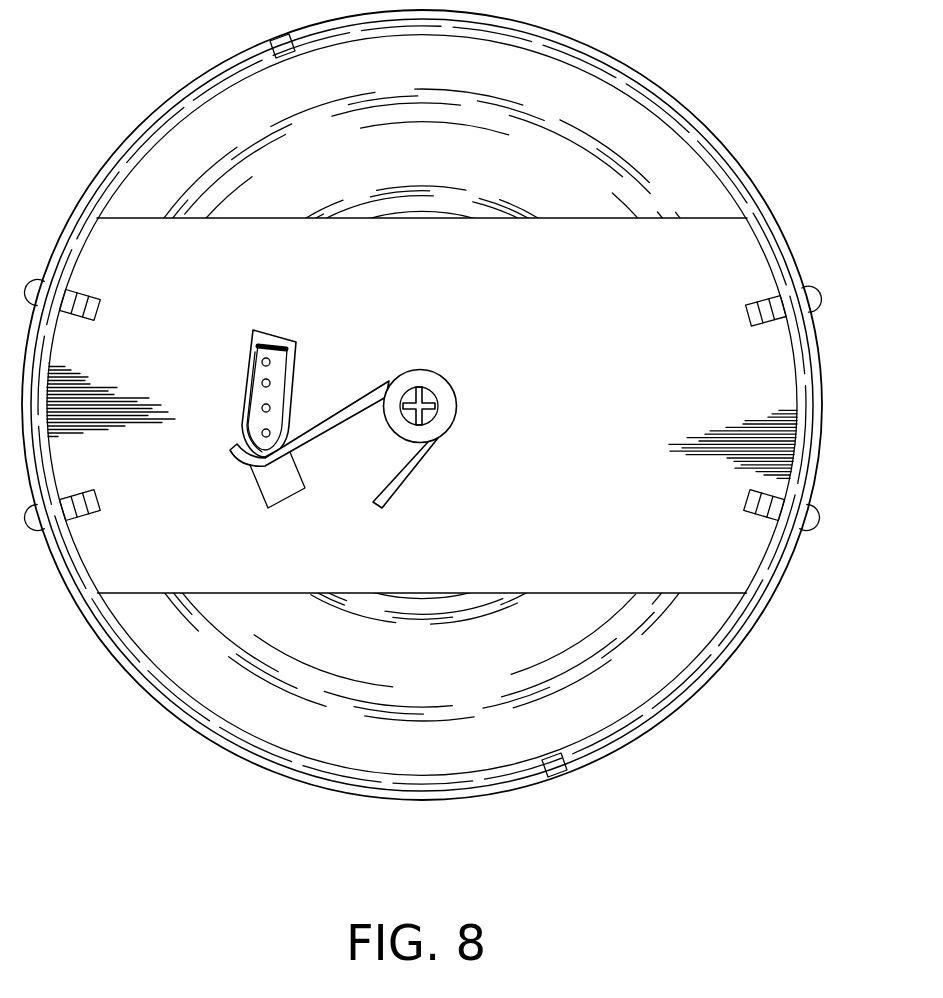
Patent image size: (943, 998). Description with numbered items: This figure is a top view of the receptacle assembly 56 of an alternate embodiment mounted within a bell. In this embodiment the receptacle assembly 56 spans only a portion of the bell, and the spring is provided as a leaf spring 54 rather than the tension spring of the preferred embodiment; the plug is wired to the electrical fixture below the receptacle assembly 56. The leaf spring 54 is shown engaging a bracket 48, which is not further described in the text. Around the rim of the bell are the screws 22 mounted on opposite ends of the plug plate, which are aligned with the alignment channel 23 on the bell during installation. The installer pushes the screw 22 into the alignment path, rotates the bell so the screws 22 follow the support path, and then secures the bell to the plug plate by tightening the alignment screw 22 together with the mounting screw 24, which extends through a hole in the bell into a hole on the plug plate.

The screw 22 is at (818, 525).
The alignment channel 23 is at (284, 35).
The mounting screw 24 is at (815, 293).
The bracket 48 is at (274, 352).
The leaf spring 54 is at (343, 398).
The receptacle assembly 56 is at (632, 408).